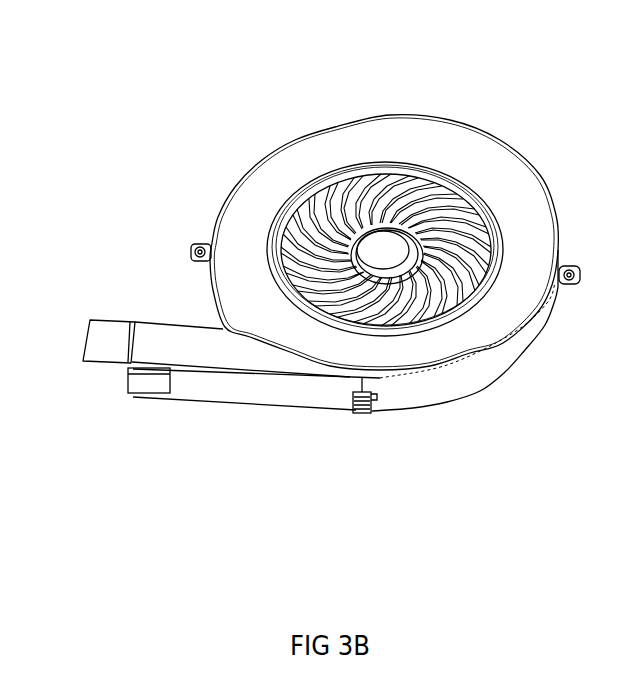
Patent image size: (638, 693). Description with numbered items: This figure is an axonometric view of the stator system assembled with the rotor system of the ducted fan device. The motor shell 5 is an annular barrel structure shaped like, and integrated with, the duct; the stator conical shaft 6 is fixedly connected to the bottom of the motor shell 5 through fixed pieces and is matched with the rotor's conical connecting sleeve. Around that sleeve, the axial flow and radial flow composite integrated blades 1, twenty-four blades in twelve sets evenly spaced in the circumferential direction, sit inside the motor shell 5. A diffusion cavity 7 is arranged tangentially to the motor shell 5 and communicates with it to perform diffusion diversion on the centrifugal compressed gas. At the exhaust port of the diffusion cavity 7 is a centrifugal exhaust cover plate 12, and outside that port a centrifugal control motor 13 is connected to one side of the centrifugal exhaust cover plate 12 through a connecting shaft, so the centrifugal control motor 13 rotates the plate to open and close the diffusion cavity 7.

The axial flow and radial flow composite integrated blade 1 is at (357, 186).
The motor shell 5 is at (350, 136).
The stator conical shaft 6 is at (385, 248).
The diffusion cavity 7 is at (256, 403).
The centrifugal exhaust cover plate 12 is at (68, 307).
The centrifugal control motor 13 is at (87, 426).